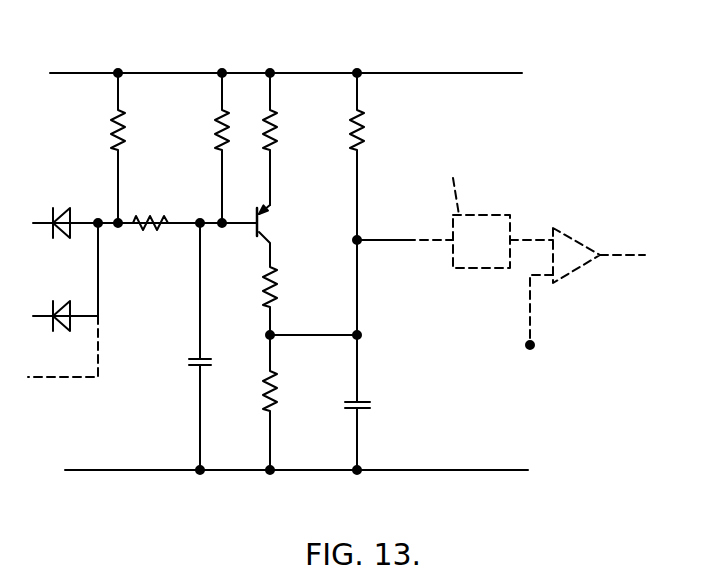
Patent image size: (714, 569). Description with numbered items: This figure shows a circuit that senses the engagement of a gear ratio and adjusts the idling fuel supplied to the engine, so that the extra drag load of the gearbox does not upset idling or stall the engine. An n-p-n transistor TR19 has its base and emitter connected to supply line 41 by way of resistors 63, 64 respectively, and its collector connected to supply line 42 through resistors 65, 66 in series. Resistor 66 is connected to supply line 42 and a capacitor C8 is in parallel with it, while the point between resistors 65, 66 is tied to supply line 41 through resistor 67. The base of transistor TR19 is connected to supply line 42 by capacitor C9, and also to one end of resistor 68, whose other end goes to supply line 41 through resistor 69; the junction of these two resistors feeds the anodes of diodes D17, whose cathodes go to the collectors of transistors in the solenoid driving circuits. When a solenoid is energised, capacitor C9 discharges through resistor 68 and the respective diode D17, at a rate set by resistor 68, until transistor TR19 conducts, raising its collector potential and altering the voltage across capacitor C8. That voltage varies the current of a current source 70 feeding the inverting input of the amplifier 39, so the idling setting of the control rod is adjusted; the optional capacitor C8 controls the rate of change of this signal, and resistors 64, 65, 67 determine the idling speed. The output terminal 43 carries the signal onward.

The supply line 41 is at (497, 73).
The supply line 42 is at (468, 470).
The resistor 69 is at (108, 141).
The resistor 63 is at (213, 141).
The resistor 64 is at (280, 141).
The resistor 67 is at (365, 141).
The resistor 68 is at (135, 230).
The diodes D17 is at (66, 210).
The n-p-n transistor TR19 is at (270, 224).
The resistor 65 is at (282, 273).
The resistor 66 is at (275, 372).
The capacitor C9 is at (197, 353).
The capacitor C8 is at (370, 400).
The current source 70 is at (505, 238).
The amplifier 39 is at (597, 250).
The output terminal 43 is at (532, 347).